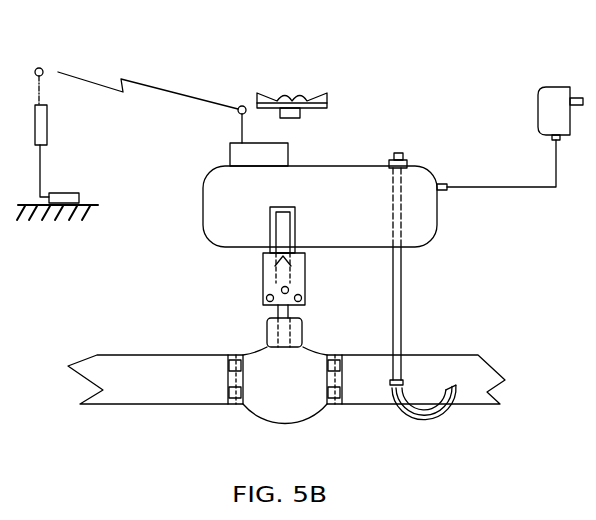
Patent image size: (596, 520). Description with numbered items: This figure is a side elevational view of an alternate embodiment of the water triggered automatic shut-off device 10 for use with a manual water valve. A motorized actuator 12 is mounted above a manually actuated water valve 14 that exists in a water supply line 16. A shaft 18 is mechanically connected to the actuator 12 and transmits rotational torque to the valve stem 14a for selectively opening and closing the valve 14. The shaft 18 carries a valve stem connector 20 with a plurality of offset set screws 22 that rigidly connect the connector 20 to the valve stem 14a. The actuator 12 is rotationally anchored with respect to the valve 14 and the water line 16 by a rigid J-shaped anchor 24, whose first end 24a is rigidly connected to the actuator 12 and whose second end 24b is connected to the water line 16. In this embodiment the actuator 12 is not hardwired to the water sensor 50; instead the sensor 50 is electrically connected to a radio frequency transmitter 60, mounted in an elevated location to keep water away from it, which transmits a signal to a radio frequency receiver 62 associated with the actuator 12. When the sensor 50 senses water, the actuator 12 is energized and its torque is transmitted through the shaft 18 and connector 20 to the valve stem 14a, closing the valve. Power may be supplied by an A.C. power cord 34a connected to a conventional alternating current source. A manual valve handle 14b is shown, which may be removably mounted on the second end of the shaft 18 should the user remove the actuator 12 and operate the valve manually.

The water triggered automatic shut-off device 10 is at (168, 46).
The motorized actuator 12 is at (347, 206).
The manually actuated water valve 14 is at (268, 424).
The valve stem 14a is at (276, 313).
The manual valve handle 14b is at (285, 97).
The water supply line 16 is at (172, 384).
The shaft 18 is at (262, 253).
The valve stem connector 20 is at (306, 269).
The set screws 22 is at (302, 298).
The anchor 24 is at (403, 273).
The first end of anchor 24a is at (404, 154).
The second end of anchor 24b is at (427, 420).
The A.C. power cord 34a is at (543, 92).
The water sensor 50 is at (62, 193).
The radio frequency transmitter 60 is at (47, 125).
The radio frequency receiver 62 is at (230, 154).